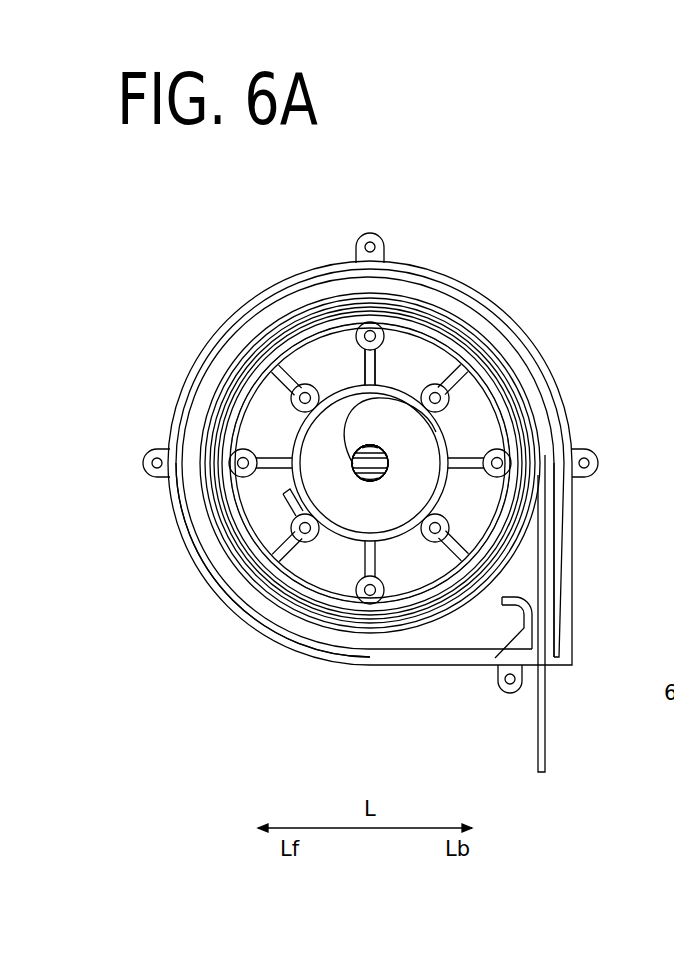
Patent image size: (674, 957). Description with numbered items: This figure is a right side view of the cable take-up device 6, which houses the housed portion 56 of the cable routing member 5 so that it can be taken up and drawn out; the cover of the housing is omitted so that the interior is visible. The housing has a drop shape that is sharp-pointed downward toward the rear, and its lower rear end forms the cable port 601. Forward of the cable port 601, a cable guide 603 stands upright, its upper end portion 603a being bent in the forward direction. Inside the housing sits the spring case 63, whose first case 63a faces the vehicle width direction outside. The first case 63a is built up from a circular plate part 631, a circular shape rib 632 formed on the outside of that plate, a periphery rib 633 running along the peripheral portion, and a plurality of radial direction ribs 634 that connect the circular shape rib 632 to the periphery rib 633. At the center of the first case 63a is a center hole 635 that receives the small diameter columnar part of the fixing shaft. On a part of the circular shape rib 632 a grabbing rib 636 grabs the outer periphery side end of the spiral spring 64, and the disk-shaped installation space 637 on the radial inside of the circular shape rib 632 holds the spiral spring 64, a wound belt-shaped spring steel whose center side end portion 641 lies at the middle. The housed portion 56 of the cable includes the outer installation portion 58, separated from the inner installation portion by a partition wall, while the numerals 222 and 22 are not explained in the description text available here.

The cable take-up device 6 is at (240, 277).
The spring case 63 is at (370, 463).
The first case 63a is at (505, 437).
The circular plate part 631 is at (483, 420).
The circular shape rib 632 is at (508, 332).
The periphery rib 633 is at (393, 385).
The radial direction ribs 634 is at (460, 355).
The center hole 635 is at (347, 530).
The grabbing rib 636 is at (284, 500).
The installation space 637 is at (413, 503).
The spiral spring 64 is at (342, 428).
The center side end portion 641 is at (352, 465).
The outer installation portion 58 is at (362, 482).
The housed portion 56 is at (370, 463).
The drive shaft 222 is at (386, 448).
The drive unit 22 is at (370, 463).
The cable guide 603 is at (522, 633).
The upper end portion 603a is at (500, 605).
The cable port 601 is at (556, 662).
The cable routing member 5 is at (545, 762).